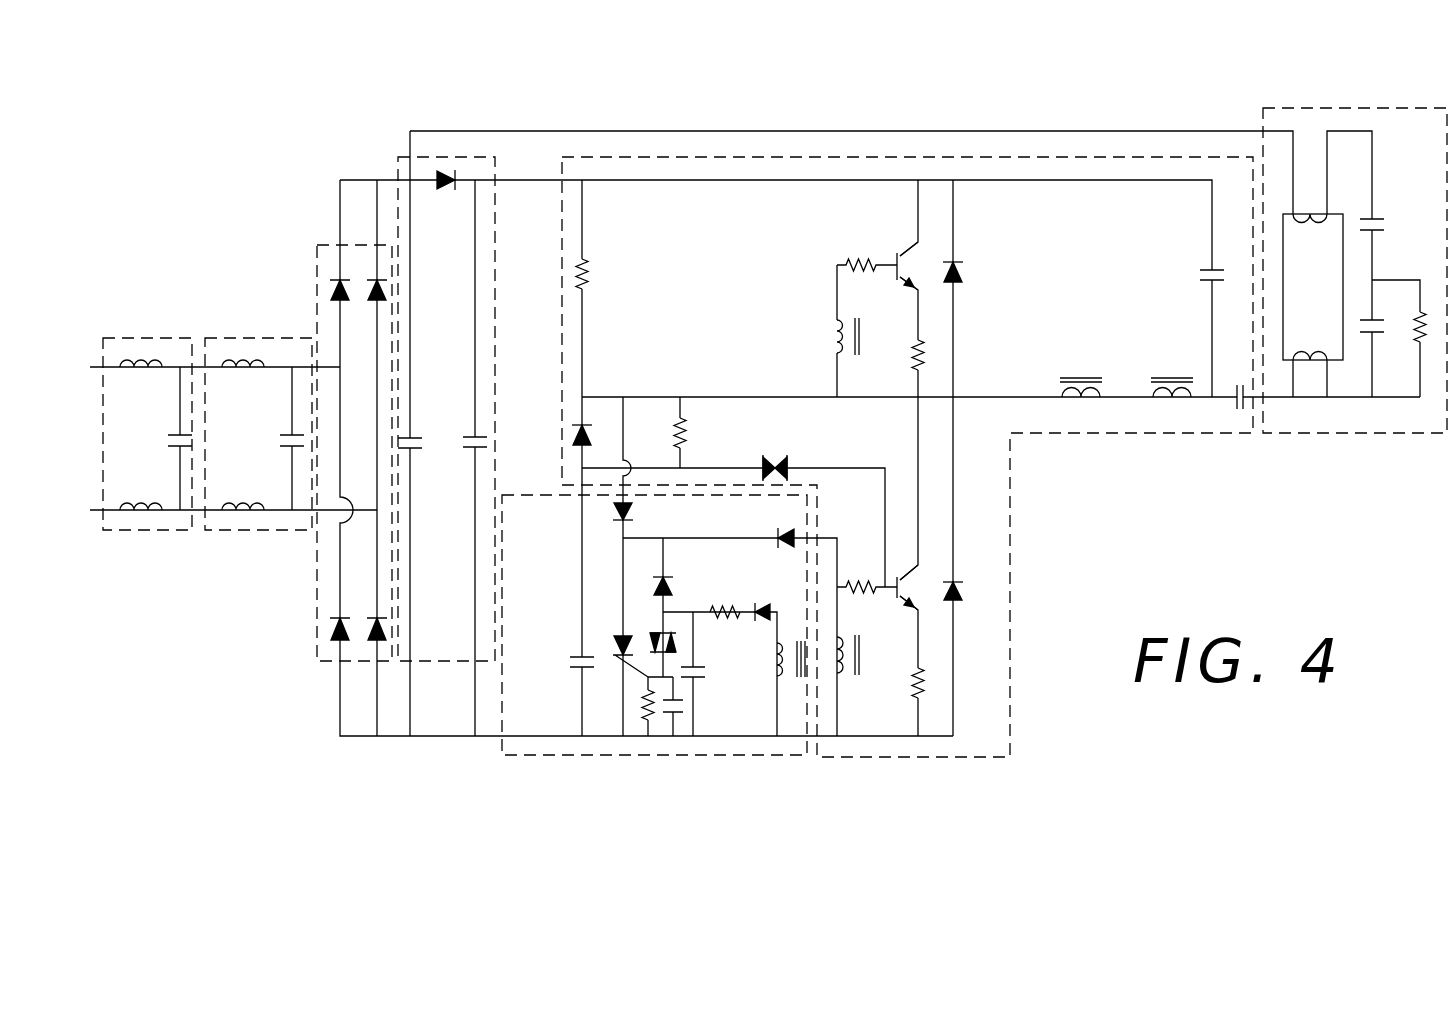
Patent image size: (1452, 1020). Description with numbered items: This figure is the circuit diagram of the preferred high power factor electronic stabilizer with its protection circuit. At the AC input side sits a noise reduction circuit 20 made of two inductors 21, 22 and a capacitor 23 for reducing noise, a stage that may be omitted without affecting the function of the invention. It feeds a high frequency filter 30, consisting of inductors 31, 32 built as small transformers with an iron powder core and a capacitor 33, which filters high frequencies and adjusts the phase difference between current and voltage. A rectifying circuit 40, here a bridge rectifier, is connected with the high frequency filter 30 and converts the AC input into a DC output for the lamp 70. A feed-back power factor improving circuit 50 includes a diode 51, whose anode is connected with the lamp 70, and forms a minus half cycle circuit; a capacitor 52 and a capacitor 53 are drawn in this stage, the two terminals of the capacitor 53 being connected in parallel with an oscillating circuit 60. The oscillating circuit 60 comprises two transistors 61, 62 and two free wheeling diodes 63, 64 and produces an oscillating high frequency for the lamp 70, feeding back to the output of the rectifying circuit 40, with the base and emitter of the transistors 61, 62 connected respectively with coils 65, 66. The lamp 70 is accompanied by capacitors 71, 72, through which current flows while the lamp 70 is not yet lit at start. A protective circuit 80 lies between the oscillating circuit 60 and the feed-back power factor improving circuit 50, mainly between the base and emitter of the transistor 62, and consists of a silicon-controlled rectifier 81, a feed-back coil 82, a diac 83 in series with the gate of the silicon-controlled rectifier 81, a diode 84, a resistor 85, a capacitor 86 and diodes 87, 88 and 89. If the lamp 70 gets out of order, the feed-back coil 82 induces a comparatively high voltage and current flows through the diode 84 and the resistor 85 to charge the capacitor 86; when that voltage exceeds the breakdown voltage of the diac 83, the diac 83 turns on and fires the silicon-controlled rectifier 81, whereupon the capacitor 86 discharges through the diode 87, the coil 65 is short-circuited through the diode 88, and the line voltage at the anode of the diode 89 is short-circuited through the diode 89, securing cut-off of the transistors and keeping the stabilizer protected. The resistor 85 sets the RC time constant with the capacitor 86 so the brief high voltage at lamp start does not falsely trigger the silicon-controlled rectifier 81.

The noise reduction circuit 20 is at (162, 338).
The inductor 21 is at (143, 357).
The inductor 22 is at (143, 522).
The capacitor 23 is at (170, 440).
The high frequency filter 30 is at (270, 338).
The inductor 31 is at (238, 357).
The inductor 32 is at (233, 522).
The capacitor 33 is at (282, 440).
The rectifying circuit 40 is at (317, 258).
The feed-back power factor improving circuit 50 is at (447, 157).
The diode 51 is at (447, 192).
The capacitor 52 is at (416, 438).
The capacitor 53 is at (470, 448).
The oscillating circuit 60 is at (860, 157).
The transistor 61 is at (920, 258).
The transistor 62 is at (920, 578).
The free wheeling diode 63 is at (960, 288).
The free wheeling diode 64 is at (960, 600).
The coil 65 is at (848, 680).
The coil 66 is at (848, 360).
The lamp 70 is at (1345, 108).
The capacitor 71 is at (1378, 215).
The capacitor 72 is at (1378, 312).
The protective circuit 80 is at (552, 755).
The silicon-controlled rectifier 81 is at (618, 657).
The feed-back coil 82 is at (790, 683).
The diac 83 is at (678, 640).
The diode 84 is at (767, 608).
The resistor 85 is at (723, 605).
The capacitor 86 is at (703, 680).
The diode 87 is at (682, 583).
The diode 88 is at (777, 533).
The diode 89 is at (637, 518).